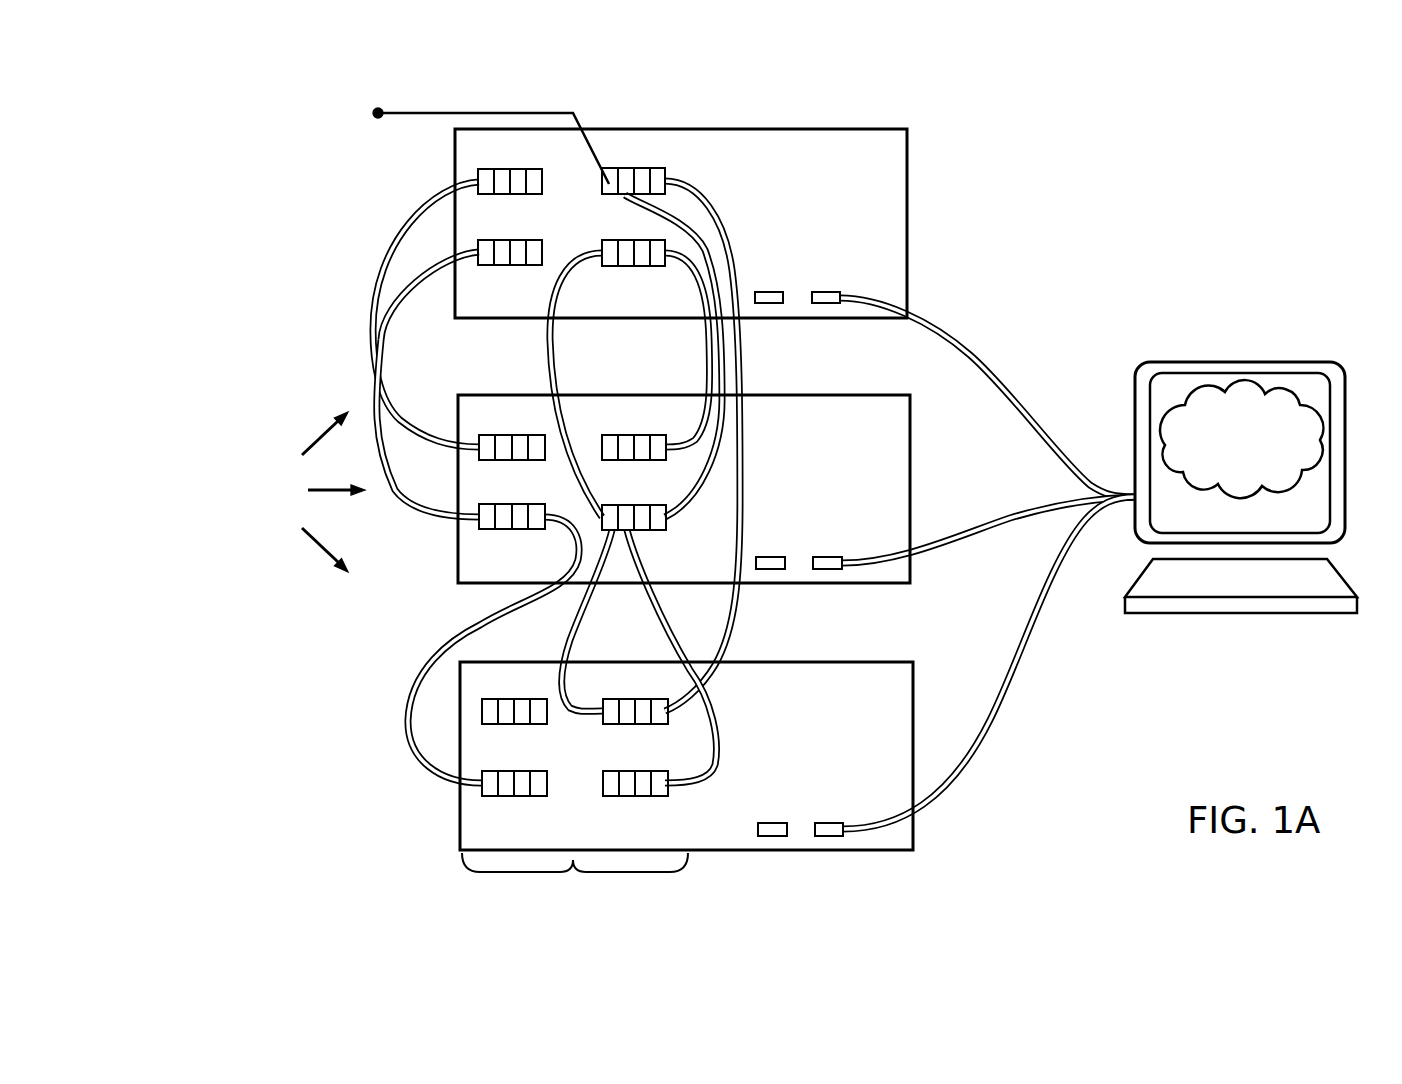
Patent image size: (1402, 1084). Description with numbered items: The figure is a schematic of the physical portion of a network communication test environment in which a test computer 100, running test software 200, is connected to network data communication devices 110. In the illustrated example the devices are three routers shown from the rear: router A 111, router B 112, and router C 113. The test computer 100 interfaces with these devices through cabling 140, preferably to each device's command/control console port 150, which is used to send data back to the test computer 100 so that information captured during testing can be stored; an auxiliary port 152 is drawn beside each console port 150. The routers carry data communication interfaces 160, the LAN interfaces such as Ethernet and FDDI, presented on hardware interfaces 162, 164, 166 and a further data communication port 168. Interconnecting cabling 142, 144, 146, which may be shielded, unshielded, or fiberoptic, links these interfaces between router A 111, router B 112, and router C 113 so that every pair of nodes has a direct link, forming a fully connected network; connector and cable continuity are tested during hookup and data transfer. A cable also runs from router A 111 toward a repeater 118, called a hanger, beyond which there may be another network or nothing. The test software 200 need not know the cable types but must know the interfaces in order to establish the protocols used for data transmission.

The test computer 100 is at (1267, 634).
The test software 200 is at (1306, 409).
The network data communication devices 110 is at (221, 492).
The router A 111 is at (903, 130).
The router B 112 is at (868, 395).
The router C 113 is at (873, 662).
The repeater 118 is at (428, 146).
The cabling 140 is at (1036, 425).
The interconnecting cabling 142 is at (370, 306).
The interconnecting cabling 144 is at (398, 488).
The interconnecting cabling 146 is at (552, 340).
The command/control console port 150 is at (818, 832).
The auxiliary port 152 is at (758, 832).
The data communication interfaces 160 is at (462, 874).
The hardware interface 162 is at (478, 175).
The hardware interface 164 is at (522, 268).
The hardware interface 166 is at (665, 175).
The data communication port 168 is at (637, 268).